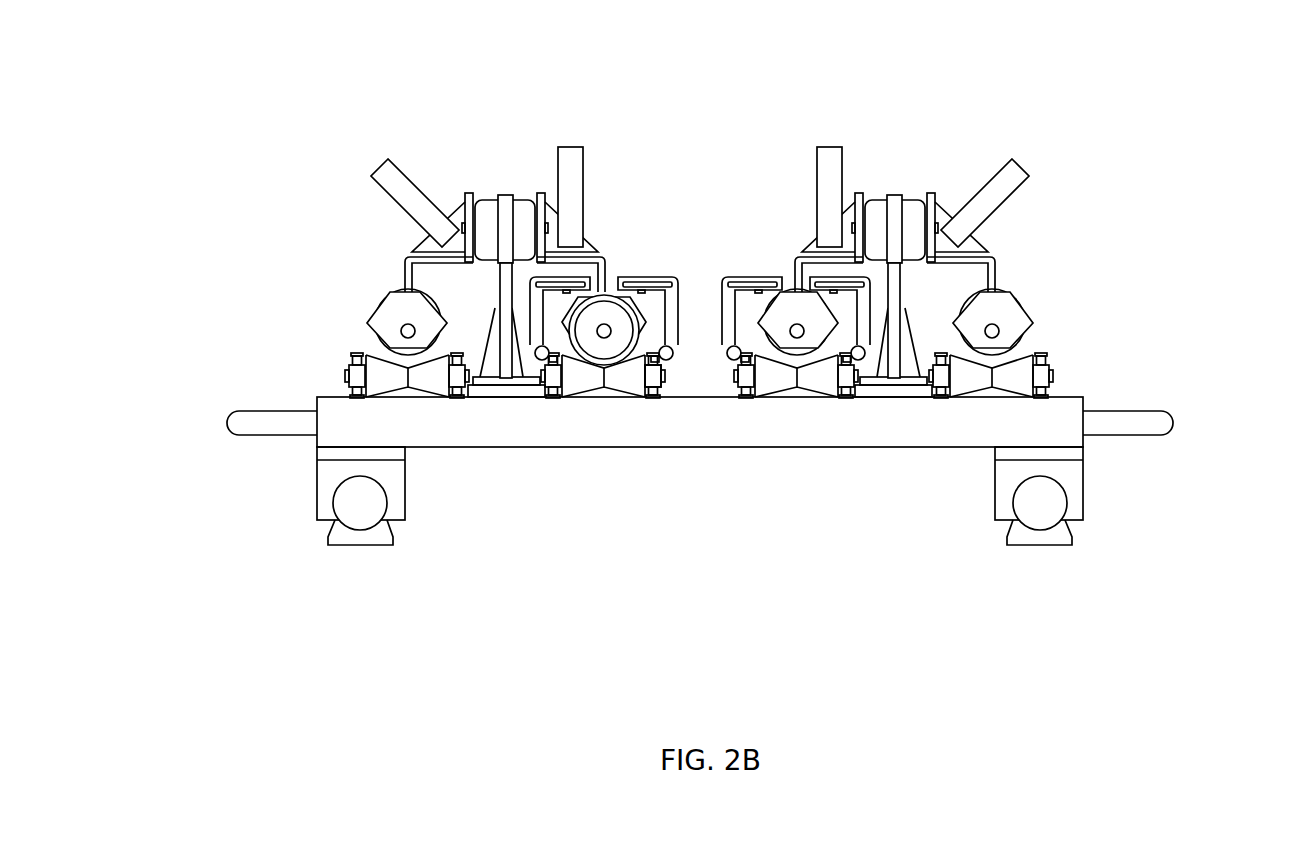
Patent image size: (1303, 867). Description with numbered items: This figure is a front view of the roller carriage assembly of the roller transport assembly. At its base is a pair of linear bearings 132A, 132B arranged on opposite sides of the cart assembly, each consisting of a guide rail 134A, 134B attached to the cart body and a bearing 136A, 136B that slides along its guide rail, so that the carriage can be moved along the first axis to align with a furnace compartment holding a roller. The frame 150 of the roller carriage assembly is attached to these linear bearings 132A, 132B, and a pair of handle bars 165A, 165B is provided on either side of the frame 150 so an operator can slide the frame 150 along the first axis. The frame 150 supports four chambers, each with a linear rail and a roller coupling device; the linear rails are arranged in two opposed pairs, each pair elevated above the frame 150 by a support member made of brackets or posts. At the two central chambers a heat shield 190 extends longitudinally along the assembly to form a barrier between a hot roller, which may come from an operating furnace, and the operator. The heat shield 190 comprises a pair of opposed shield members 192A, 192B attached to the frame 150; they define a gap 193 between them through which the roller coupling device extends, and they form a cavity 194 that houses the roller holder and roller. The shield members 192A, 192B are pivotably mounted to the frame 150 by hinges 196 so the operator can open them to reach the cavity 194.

The frame 150 is at (1073, 398).
The handle bar 165A is at (229, 424).
The handle bar 165B is at (1171, 424).
The bearing 136A is at (317, 478).
The bearing 136B is at (1083, 478).
The guide rail 134A is at (335, 535).
The guide rail 134B is at (1065, 535).
The linear bearing 132A is at (418, 500).
The linear bearing 132B is at (982, 500).
The heat shield 190 is at (768, 270).
The shield member 192A is at (533, 303).
The shield member 192B is at (650, 278).
The gap 193 is at (613, 278).
The cavity 194 is at (750, 330).
The hinge 196 is at (671, 366).